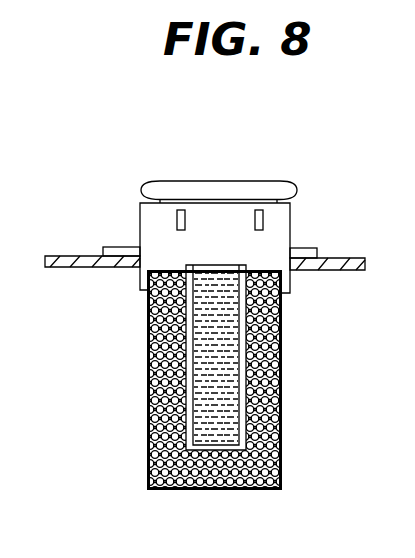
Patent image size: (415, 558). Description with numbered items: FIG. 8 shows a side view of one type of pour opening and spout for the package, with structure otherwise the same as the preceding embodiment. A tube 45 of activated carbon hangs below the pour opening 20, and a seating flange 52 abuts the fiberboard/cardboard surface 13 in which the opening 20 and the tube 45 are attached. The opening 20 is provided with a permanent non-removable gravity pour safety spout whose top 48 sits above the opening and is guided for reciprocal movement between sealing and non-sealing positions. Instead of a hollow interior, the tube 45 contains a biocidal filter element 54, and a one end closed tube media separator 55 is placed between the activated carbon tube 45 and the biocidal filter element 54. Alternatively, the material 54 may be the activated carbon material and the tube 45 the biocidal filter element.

The fiberboard/cardboard surface 13 is at (64, 256).
The pour opening 20 is at (140, 221).
The tube 45 is at (90, 474).
The top 48 is at (222, 190).
The seating flange 52 is at (301, 250).
The biocidal filter element 54 is at (224, 343).
The one end closed tube media separator 55 is at (190, 378).